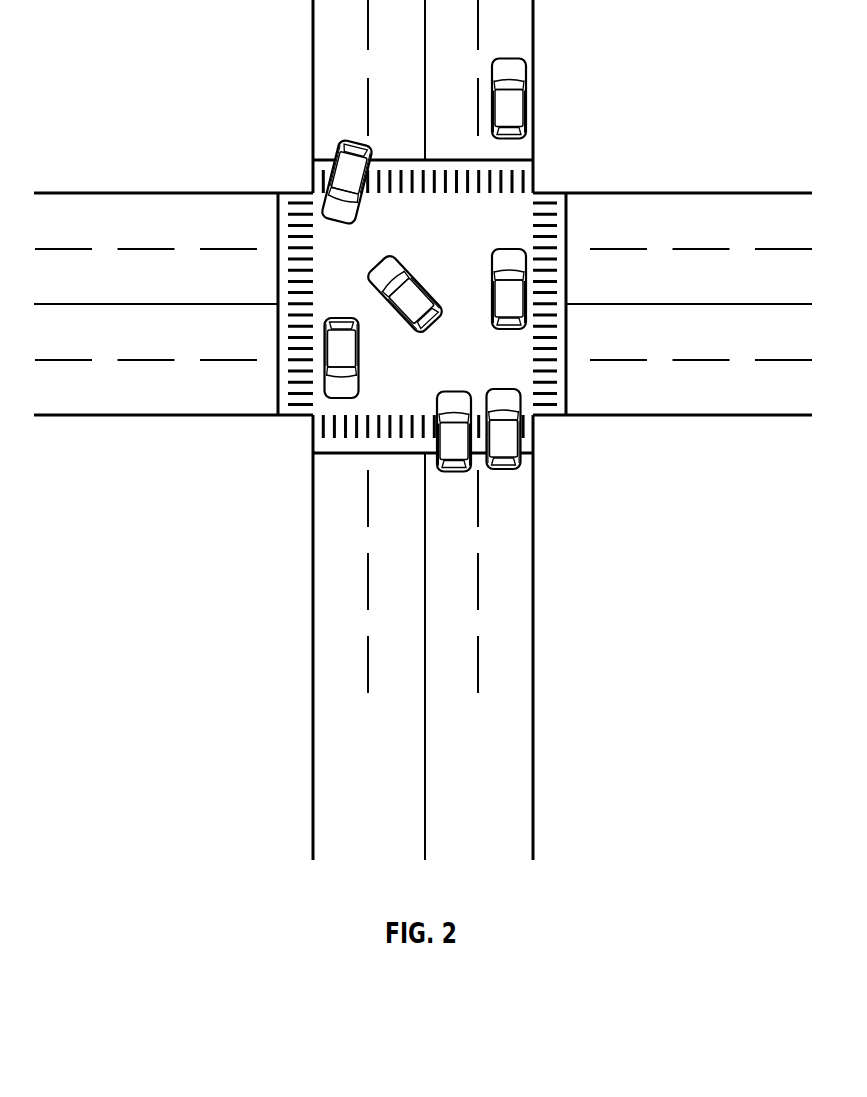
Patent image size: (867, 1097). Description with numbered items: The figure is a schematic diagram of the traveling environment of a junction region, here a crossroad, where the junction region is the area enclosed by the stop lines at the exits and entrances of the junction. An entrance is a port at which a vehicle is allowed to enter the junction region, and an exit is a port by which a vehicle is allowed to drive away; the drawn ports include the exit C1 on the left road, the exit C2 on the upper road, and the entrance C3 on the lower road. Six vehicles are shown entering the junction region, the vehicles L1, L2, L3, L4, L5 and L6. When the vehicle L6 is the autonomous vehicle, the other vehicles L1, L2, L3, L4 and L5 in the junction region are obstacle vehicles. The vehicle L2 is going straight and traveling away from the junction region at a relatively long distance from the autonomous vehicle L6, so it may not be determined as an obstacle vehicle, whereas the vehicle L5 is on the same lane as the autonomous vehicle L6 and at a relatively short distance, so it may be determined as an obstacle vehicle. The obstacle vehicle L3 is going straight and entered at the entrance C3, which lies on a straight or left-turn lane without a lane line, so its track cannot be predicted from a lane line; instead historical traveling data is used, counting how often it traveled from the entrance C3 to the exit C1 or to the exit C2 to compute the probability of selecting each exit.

The exit C1 is at (173, 304).
The exit C2 is at (423, 96).
The entrance C3 is at (423, 637).
The vehicle L1 is at (405, 294).
The vehicle L2 is at (358, 358).
The obstacle vehicle L3 is at (441, 428).
The vehicle L4 is at (352, 186).
The vehicle L5 is at (509, 275).
The autonomous vehicle L6 is at (504, 414).